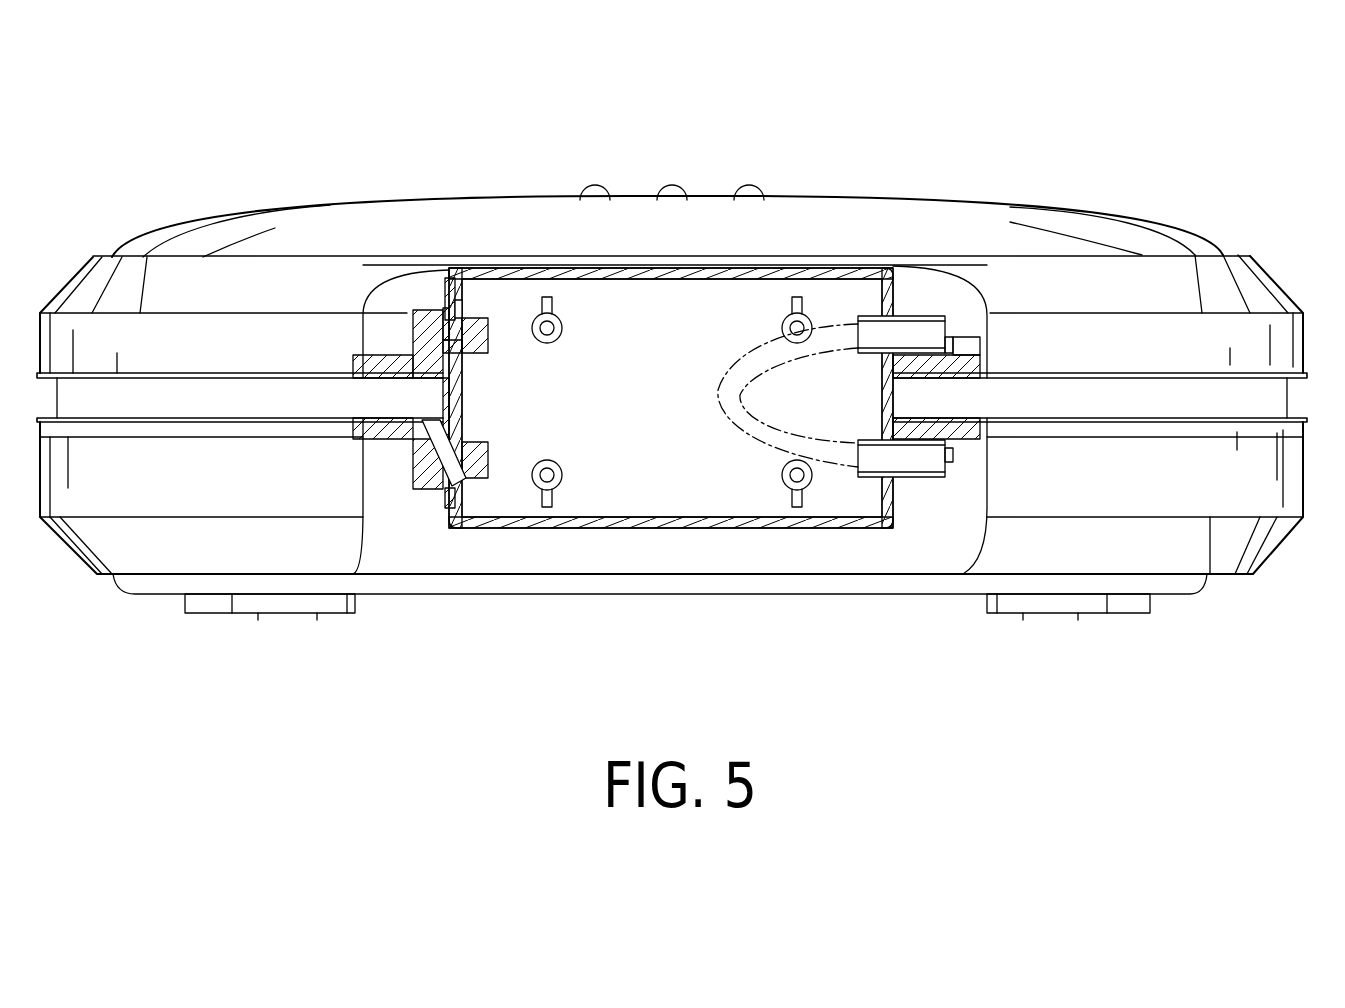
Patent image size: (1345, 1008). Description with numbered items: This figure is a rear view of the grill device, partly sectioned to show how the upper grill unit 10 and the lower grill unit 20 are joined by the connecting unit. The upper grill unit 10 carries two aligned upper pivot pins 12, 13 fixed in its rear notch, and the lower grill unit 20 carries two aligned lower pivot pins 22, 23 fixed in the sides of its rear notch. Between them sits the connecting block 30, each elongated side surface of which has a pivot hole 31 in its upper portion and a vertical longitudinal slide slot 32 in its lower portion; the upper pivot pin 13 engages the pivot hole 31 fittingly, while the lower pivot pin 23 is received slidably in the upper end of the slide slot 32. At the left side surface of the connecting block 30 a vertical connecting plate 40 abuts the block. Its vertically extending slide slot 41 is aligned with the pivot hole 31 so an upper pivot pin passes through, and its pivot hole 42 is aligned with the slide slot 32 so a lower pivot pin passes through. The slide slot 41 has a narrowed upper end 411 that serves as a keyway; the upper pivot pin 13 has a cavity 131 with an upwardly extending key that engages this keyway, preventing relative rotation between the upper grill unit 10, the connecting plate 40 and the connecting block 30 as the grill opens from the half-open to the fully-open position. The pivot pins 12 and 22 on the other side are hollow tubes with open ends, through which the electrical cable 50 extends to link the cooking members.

The upper grill unit 10 is at (853, 194).
The upper pivot pin 12 is at (910, 316).
The upper pivot pin 13 is at (480, 318).
The cavity 131 is at (458, 313).
The lower grill unit 20 is at (1266, 548).
The lower pivot pin 22 is at (921, 478).
The lower pivot pin 23 is at (478, 462).
The connecting block 30 is at (713, 534).
The pivot hole 31 is at (450, 292).
The slide slot 32 is at (462, 497).
The connecting plate 40 is at (436, 402).
The slide slot 41 is at (448, 312).
The narrowed upper end 411 is at (456, 322).
The pivot hole 42 is at (446, 489).
The electrical cable 50 is at (714, 426).